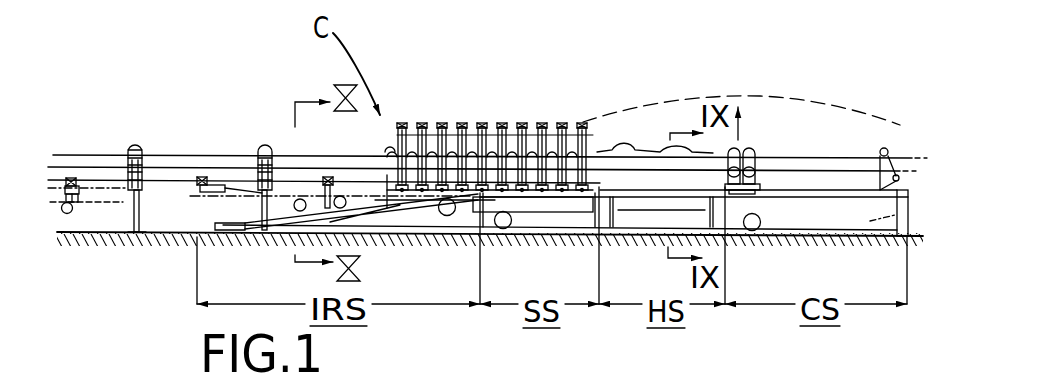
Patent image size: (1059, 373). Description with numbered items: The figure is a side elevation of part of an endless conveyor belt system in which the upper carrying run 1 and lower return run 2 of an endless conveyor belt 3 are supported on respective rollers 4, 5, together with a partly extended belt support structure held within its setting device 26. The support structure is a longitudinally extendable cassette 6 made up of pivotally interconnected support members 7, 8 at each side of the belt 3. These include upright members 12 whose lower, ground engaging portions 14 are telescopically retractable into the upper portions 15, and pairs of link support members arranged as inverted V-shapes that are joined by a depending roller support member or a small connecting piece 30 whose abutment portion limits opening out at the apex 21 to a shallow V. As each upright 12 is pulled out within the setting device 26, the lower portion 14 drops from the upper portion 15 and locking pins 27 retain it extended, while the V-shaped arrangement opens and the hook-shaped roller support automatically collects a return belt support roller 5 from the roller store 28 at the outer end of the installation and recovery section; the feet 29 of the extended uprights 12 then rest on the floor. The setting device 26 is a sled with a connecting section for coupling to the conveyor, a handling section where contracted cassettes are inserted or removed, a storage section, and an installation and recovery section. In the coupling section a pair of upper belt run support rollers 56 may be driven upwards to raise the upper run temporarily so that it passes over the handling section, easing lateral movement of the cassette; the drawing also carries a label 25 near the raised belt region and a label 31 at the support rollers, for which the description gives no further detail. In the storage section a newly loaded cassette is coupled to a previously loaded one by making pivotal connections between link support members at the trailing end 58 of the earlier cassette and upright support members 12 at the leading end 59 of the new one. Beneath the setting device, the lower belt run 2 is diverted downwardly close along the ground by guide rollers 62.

The upper carrying run 1 is at (803, 158).
The lower return run 2 is at (880, 226).
The endless conveyor belt 3 is at (55, 207).
The upper belt run support roller 4 is at (264, 146).
The return belt support roller 5 is at (72, 214).
The cassette 6 is at (489, 122).
The support member 7 is at (584, 124).
The support member 8 is at (558, 118).
The upright member 12 is at (130, 177).
The lower ground engaging portion 14 is at (126, 208).
The upper portion 15 is at (262, 193).
The apex 21 is at (72, 165).
The material pile 25 is at (648, 145).
The setting device 26 is at (458, 230).
The locking pin 27 is at (141, 174).
The roller store 28 is at (300, 228).
The foot 29 is at (137, 236).
The connecting piece 30 is at (203, 175).
The rollers 31 is at (752, 146).
The upper belt run support roller 56 is at (762, 146).
The trailing end 58 is at (480, 120).
The leading end 59 is at (493, 120).
The guide roller 62 is at (347, 208).